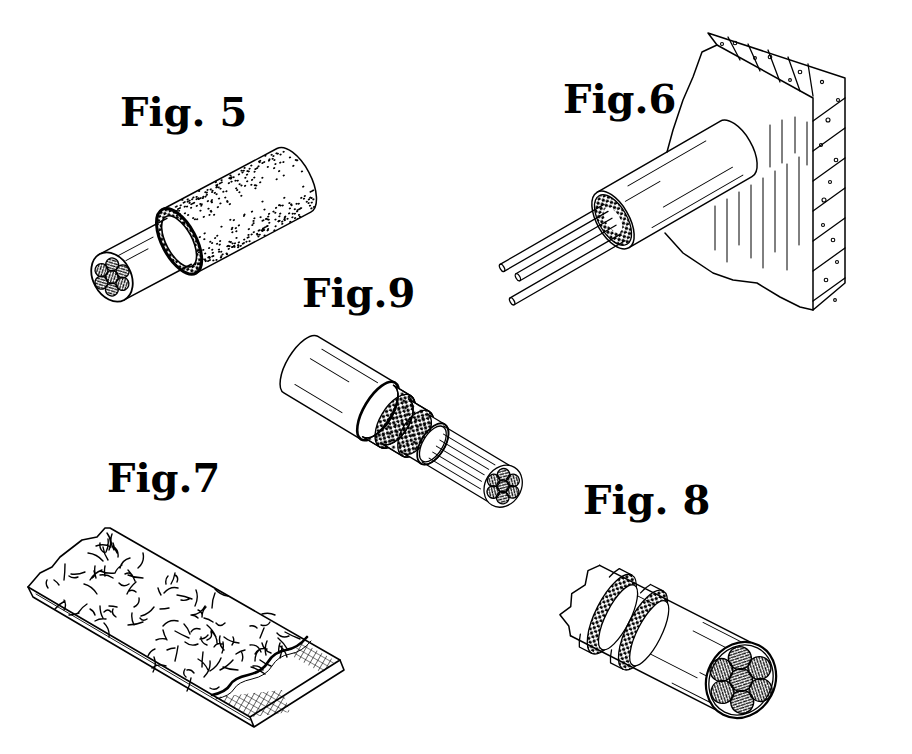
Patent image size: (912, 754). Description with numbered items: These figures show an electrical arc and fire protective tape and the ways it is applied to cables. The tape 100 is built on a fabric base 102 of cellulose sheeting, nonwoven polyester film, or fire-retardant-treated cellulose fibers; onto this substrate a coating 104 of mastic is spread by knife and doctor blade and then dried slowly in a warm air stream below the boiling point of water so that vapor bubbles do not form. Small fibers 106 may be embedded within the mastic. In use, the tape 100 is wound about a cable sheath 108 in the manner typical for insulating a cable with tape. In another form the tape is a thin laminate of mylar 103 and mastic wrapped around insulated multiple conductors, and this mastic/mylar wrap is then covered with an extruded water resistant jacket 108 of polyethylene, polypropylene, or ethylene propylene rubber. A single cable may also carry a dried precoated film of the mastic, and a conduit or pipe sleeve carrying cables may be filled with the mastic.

In FIG. 9, the tape 100 is at (450, 424).
In FIG. 7, the tape 100 is at (204, 559).
In FIG. 8, the tape 100 is at (676, 577).
In FIG. 7, the fabric base 102 is at (320, 653).
In FIG. 9, the mylar laminate layer 103 is at (433, 407).
In FIG. 5, the mastic coating 104 is at (187, 192).
In FIG. 6, the mastic coating 104 is at (625, 247).
In FIG. 7, the mastic coating 104 is at (253, 613).
In FIG. 7, the fibers 106 is at (152, 647).
In FIG. 5, the cable sheath 108 is at (128, 247).
In FIG. 9, the cable sheath 108 is at (385, 373).
In FIG. 8, the cable sheath 108 is at (711, 656).